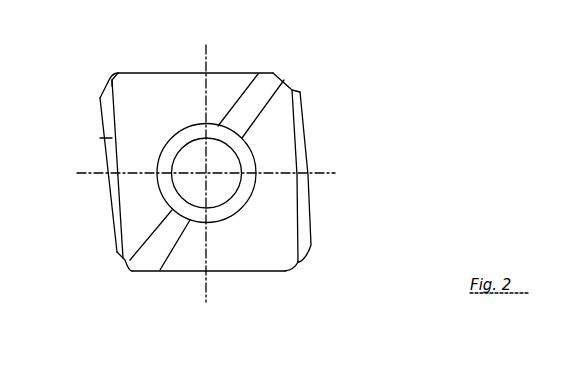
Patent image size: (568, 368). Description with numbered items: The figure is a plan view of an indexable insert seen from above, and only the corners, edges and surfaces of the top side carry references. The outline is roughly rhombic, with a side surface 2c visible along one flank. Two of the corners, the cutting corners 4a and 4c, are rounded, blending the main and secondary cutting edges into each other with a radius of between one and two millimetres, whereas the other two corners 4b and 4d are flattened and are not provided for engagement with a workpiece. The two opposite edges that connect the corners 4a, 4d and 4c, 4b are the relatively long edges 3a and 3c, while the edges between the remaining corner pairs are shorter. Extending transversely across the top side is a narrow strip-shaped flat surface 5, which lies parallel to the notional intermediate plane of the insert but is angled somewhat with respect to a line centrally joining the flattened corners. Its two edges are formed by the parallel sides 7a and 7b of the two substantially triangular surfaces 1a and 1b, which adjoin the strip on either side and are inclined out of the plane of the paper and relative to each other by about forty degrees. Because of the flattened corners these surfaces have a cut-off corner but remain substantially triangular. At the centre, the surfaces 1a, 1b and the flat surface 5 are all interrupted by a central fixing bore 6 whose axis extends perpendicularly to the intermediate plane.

The triangular surface 1a is at (162, 110).
The triangular surface 1b is at (277, 245).
The side surface 2c is at (312, 225).
The long edge 3a is at (101, 138).
The long edge 3c is at (308, 202).
The rounded cutting corner 4a is at (116, 74).
The flattened corner 4b is at (284, 82).
The rounded cutting corner 4c is at (300, 264).
The flattened corner 4d is at (125, 261).
The strip-shaped flat surface 5 is at (158, 243).
The central fixing bore 6 is at (226, 190).
The parallel side of triangular surface 7a is at (236, 108).
The parallel side of triangular surface 7b is at (259, 121).